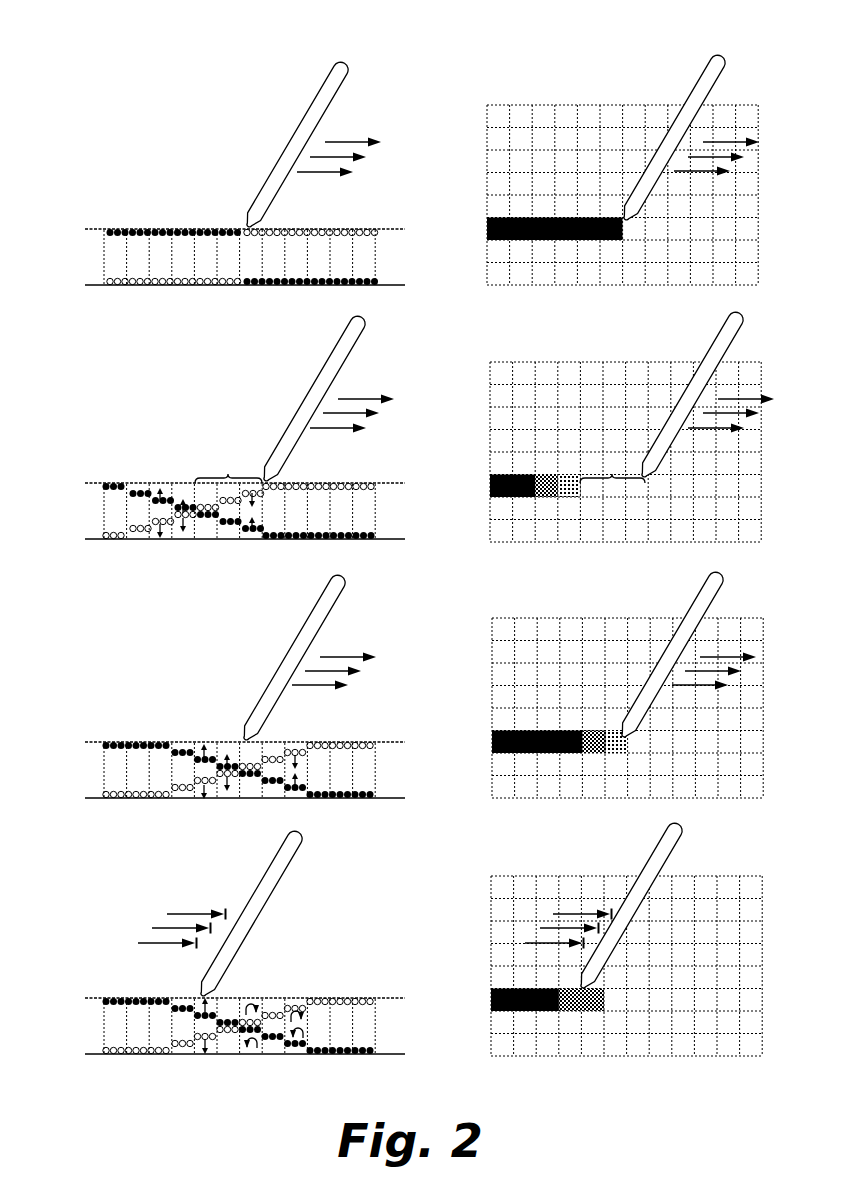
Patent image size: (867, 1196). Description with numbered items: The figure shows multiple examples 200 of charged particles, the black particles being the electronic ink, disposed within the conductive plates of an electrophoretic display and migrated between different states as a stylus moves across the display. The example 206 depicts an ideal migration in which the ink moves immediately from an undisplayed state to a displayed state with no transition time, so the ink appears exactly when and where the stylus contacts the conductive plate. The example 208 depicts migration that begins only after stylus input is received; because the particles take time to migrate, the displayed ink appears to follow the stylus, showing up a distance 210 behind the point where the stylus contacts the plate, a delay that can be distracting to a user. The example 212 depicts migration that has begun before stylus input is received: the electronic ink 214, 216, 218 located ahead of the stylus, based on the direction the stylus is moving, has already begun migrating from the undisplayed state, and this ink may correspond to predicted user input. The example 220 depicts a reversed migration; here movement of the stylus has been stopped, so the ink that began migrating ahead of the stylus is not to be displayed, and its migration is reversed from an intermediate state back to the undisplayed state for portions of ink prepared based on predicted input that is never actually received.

The multiple examples of charged particles 200 is at (148, 67).
The ideal migration example 206 is at (183, 123).
The migration begun after input example 208 is at (183, 373).
The distance 210 is at (214, 463).
The migration begun before input example 212 is at (183, 638).
The electronic ink 214 is at (248, 766).
The electronic ink 216 is at (273, 773).
The electronic ink 218 is at (297, 787).
The reversed migration example 220 is at (183, 888).